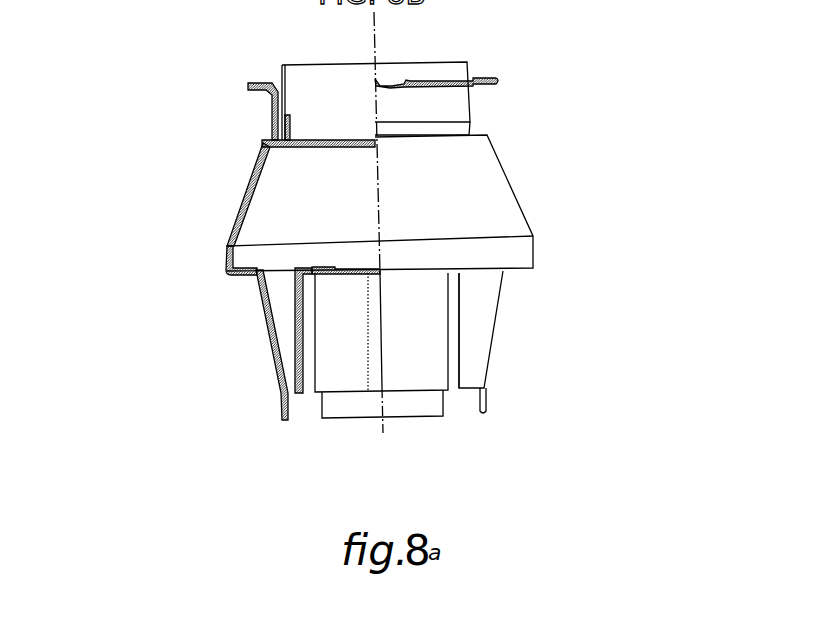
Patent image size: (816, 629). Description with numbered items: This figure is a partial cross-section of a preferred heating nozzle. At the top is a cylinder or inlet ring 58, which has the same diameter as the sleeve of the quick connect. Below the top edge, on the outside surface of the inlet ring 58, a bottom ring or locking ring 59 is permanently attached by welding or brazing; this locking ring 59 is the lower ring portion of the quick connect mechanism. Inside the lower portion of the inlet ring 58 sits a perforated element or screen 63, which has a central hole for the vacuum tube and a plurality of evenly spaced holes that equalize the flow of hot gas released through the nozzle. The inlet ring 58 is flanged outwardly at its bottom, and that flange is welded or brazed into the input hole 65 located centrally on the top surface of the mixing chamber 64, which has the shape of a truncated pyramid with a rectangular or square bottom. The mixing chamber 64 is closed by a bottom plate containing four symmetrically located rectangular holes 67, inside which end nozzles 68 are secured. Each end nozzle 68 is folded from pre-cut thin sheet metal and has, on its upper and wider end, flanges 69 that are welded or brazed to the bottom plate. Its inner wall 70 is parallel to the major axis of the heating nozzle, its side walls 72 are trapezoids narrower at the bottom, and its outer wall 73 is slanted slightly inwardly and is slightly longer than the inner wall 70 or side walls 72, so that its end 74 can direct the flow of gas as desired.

The inlet ring 58 is at (458, 66).
The locking ring 59 is at (459, 92).
The screen 63 is at (297, 147).
The mixing chamber 64 is at (487, 185).
The input hole 65 is at (276, 134).
The rectangular holes 67 is at (258, 277).
The end nozzle 68 is at (498, 310).
The flanges 69 is at (322, 269).
The inner wall 70 is at (297, 352).
The side walls 72 is at (477, 342).
The outer wall 73 is at (278, 373).
The end 74 is at (487, 403).